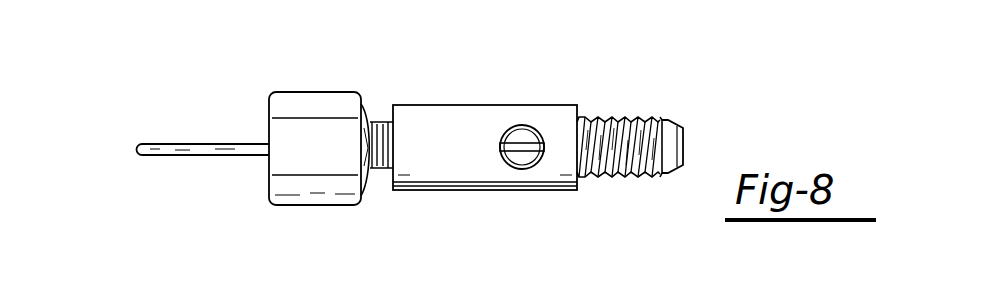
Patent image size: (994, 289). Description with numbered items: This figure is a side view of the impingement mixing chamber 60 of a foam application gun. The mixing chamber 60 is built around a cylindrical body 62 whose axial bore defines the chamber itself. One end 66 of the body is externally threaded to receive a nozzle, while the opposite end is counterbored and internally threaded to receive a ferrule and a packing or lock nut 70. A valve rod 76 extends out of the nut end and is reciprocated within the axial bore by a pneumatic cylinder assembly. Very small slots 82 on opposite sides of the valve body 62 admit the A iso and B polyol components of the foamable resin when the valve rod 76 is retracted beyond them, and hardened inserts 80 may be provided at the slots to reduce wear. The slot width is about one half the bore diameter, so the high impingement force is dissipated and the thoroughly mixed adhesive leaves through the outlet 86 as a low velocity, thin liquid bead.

The mixing chamber 60 is at (549, 90).
The cylindrical body 62 is at (511, 191).
The externally threaded end 66 is at (618, 173).
The packing or lock nut 70 is at (309, 106).
The valve rod 76 is at (200, 147).
The hardened insert 80 is at (505, 161).
The slot 82 is at (516, 147).
The outlet 86 is at (684, 146).